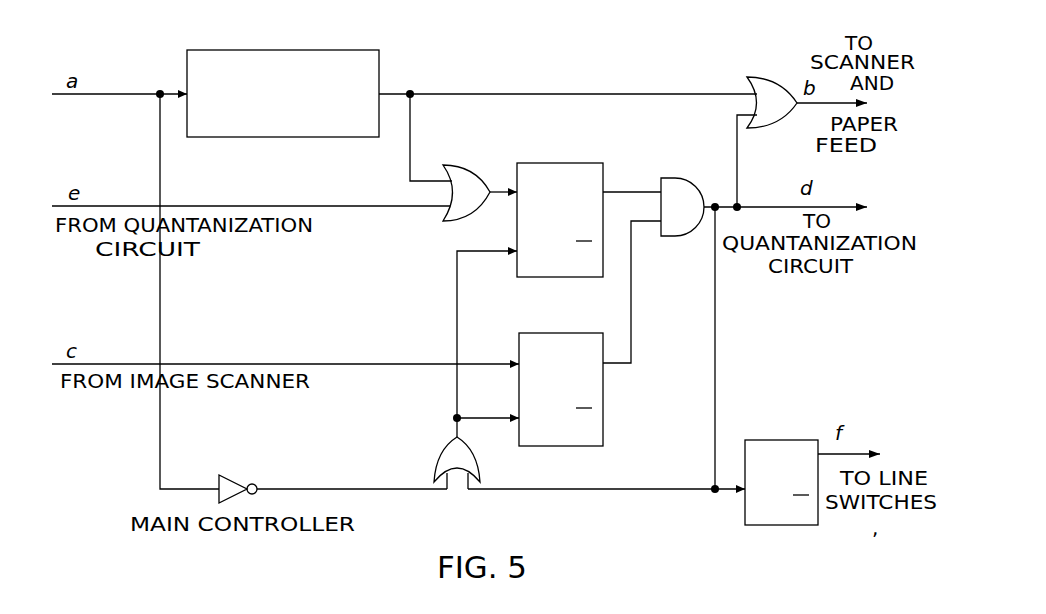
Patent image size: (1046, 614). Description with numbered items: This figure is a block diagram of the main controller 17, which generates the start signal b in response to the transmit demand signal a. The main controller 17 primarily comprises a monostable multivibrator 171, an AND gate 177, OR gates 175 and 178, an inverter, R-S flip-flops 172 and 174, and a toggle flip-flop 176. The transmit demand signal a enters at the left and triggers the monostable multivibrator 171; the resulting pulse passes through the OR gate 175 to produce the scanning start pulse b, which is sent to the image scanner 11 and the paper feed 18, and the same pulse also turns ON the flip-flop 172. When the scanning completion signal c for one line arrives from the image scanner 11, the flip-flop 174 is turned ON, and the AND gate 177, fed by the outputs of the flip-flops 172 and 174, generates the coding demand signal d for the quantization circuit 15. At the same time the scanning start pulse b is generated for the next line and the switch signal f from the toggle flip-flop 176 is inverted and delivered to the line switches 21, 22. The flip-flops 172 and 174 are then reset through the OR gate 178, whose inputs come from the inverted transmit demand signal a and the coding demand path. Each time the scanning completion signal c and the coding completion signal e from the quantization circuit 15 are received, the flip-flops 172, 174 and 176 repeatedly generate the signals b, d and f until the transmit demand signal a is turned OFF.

The monostable multivibrator 171 is at (339, 50).
The R-S flip-flop 172 is at (556, 163).
The R-S flip-flop 174 is at (541, 333).
The OR gate 175 is at (774, 77).
The toggle flip-flop 176 is at (773, 440).
The AND gate 177 is at (676, 178).
The OR gate 178 is at (436, 462).
The image scanner 11 is at (586, 232).
The quantization circuit 15 is at (232, 260).
The main controller 17 is at (386, 535).
The paper feed 18 is at (906, 156).
The line switch 21 is at (866, 539).
The line switch 22 is at (909, 539).